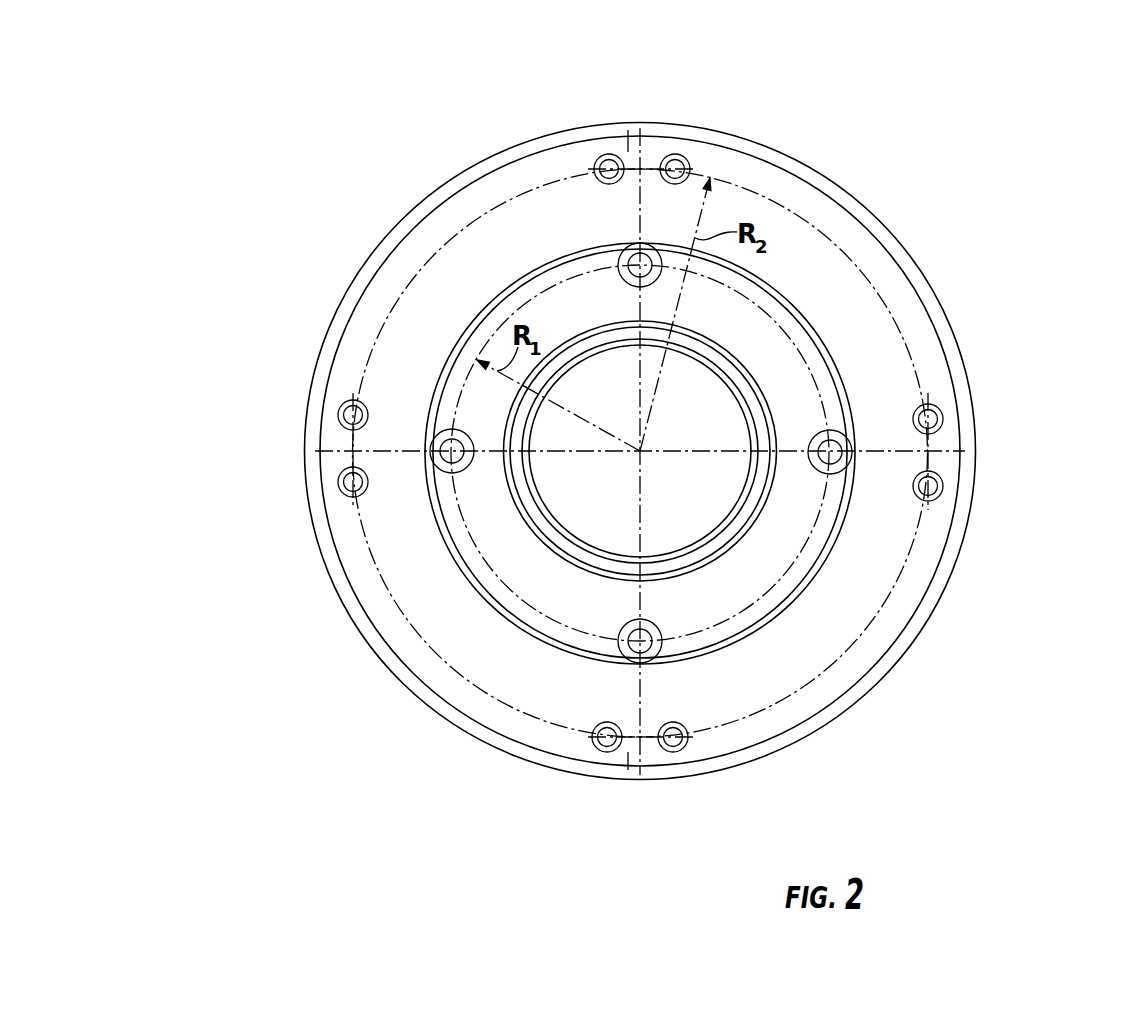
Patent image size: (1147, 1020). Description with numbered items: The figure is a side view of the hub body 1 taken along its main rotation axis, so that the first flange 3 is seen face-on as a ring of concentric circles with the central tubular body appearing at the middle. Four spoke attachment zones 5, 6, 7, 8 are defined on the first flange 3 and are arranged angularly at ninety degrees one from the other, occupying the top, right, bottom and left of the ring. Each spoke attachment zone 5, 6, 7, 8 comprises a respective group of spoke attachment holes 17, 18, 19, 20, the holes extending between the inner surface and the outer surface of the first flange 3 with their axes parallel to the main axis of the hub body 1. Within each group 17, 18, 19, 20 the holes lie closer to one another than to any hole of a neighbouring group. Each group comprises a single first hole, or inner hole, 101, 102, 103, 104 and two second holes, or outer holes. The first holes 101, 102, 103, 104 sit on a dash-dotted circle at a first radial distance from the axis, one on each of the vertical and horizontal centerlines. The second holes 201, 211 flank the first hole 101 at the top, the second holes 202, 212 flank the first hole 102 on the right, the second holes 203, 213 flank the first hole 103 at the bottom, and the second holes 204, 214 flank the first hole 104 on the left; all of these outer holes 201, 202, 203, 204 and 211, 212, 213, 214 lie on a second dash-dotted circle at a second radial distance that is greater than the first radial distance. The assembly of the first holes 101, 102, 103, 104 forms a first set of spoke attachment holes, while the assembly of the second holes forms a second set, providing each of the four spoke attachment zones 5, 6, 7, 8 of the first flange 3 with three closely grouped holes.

The hub body 1 is at (1020, 133).
The first flange 3 is at (822, 180).
The spoke attachment zone 5 is at (667, 130).
The spoke attachment zone 6 is at (973, 462).
The spoke attachment zone 7 is at (667, 777).
The spoke attachment zone 8 is at (305, 434).
The group of spoke attachment holes 17 is at (627, 140).
The group of spoke attachment holes 18 is at (942, 445).
The group of spoke attachment holes 19 is at (630, 752).
The group of spoke attachment holes 20 is at (328, 457).
The first hole 101 is at (619, 259).
The first hole 102 is at (838, 447).
The first hole 103 is at (662, 632).
The first hole 104 is at (448, 459).
The second hole 201 is at (598, 157).
The second hole 202 is at (936, 413).
The second hole 203 is at (689, 734).
The second hole 204 is at (342, 494).
The second hole 211 is at (686, 156).
The second hole 212 is at (935, 493).
The second hole 213 is at (592, 737).
The second hole 214 is at (341, 403).